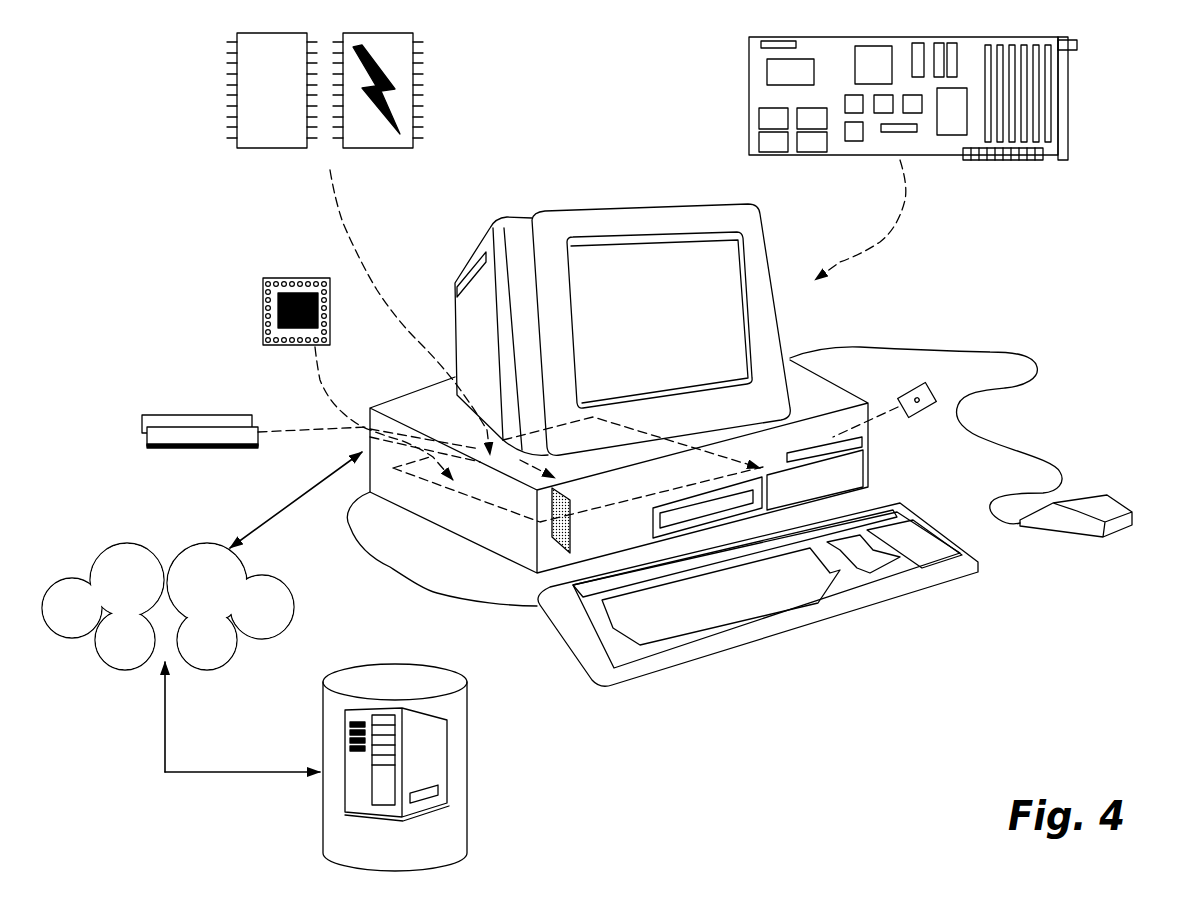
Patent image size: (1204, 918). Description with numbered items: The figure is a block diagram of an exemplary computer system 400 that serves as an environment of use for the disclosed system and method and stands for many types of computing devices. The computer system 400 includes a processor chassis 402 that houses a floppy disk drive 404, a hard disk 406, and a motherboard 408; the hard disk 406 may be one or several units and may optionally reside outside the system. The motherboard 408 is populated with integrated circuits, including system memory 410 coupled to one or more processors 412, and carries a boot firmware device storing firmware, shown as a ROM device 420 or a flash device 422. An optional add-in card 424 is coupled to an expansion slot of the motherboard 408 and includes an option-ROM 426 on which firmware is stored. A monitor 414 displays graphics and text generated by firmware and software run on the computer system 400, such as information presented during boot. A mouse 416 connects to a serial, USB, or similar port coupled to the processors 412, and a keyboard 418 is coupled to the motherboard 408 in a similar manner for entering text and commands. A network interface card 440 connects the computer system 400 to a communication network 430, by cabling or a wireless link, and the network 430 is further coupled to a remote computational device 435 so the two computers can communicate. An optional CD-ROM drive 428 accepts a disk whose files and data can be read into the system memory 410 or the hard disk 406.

The computer system 400 is at (745, 748).
The processor chassis 402 is at (852, 437).
The floppy disk drive 404 is at (832, 440).
The hard disk 406 is at (837, 473).
The motherboard 408 is at (477, 502).
The system memory 410 is at (170, 423).
The processor 412 is at (330, 327).
The monitor 414 is at (768, 275).
The mouse 416 is at (1103, 537).
The keyboard 418 is at (863, 608).
The ROM device 420 is at (272, 137).
The flash device 422 is at (383, 138).
The add-in card 424 is at (1057, 87).
The option-ROM 426 is at (775, 72).
The CD-ROM drive 428 is at (653, 523).
The communication network 430 is at (207, 655).
The remote computational device 435 is at (467, 730).
The network interface card 440 is at (550, 547).